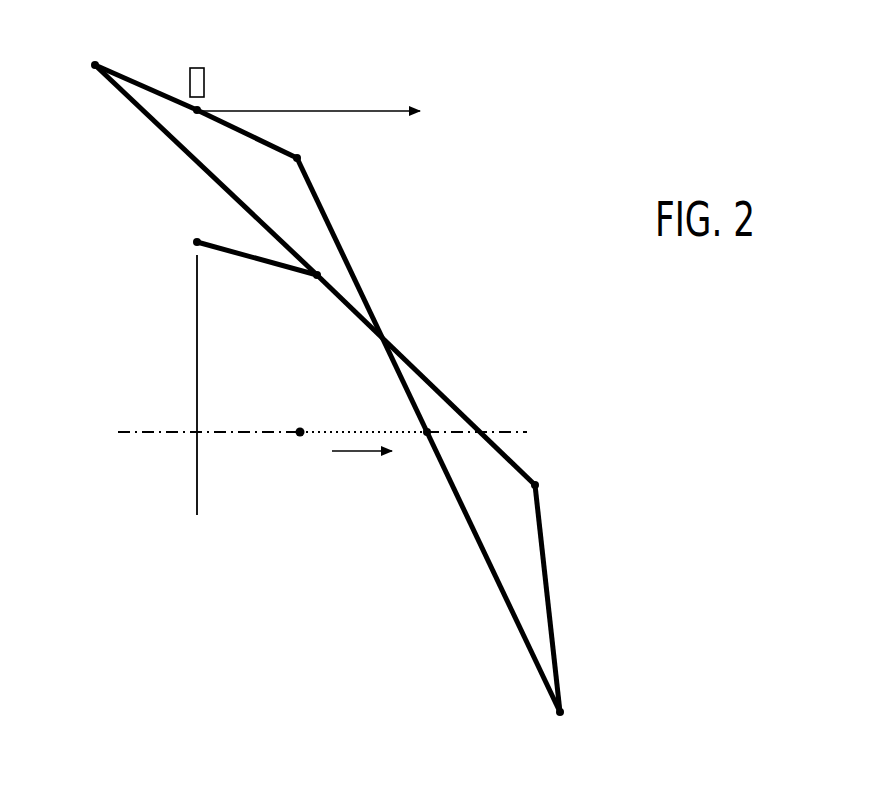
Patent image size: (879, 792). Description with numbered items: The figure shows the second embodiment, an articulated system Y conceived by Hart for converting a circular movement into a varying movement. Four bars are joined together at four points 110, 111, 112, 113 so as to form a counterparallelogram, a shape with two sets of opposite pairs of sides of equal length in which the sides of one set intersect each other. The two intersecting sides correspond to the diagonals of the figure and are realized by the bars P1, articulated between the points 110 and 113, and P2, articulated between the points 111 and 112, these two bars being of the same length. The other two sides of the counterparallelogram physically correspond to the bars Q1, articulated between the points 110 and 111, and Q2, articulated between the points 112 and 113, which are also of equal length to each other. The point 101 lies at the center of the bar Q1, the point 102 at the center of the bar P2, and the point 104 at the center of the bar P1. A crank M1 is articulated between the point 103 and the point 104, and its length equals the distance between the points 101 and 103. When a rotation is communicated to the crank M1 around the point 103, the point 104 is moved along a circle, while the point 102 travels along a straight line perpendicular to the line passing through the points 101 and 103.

The counterparallelogram joint point 110 is at (122, 50).
The center point of bar Q1 101 is at (199, 109).
The counterparallelogram joint point 111 is at (299, 160).
The crank pivot point 103 is at (197, 243).
The center point of bar P1 104 is at (317, 277).
The center point of bar P2 102 is at (426, 434).
The counterparallelogram joint point 113 is at (537, 487).
The counterparallelogram joint point 112 is at (562, 712).
The counterparallelogram side bar Q1 is at (256, 145).
The counterparallelogram side bar Q2 is at (552, 596).
The diagonal bar P1 is at (450, 398).
The diagonal bar P2 is at (368, 258).
The crank M1 is at (244, 259).
The articulated system Y is at (516, 291).